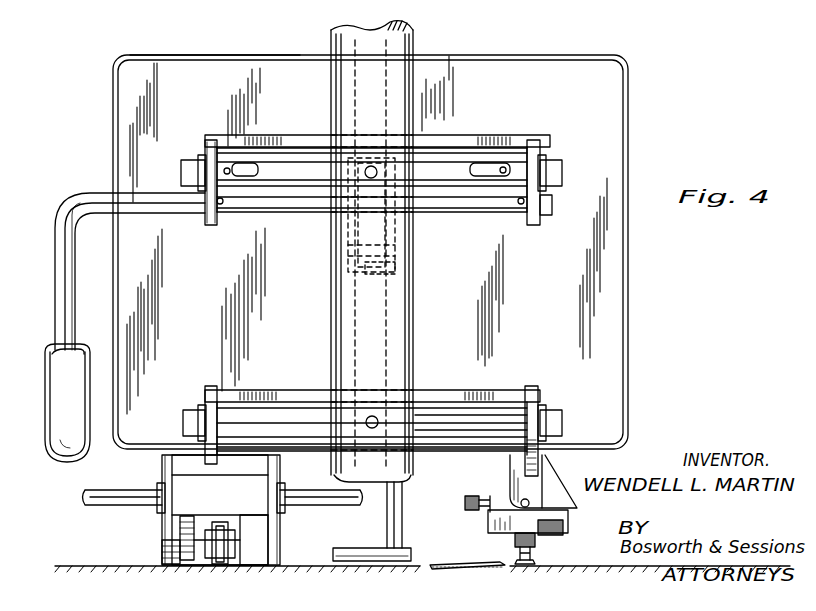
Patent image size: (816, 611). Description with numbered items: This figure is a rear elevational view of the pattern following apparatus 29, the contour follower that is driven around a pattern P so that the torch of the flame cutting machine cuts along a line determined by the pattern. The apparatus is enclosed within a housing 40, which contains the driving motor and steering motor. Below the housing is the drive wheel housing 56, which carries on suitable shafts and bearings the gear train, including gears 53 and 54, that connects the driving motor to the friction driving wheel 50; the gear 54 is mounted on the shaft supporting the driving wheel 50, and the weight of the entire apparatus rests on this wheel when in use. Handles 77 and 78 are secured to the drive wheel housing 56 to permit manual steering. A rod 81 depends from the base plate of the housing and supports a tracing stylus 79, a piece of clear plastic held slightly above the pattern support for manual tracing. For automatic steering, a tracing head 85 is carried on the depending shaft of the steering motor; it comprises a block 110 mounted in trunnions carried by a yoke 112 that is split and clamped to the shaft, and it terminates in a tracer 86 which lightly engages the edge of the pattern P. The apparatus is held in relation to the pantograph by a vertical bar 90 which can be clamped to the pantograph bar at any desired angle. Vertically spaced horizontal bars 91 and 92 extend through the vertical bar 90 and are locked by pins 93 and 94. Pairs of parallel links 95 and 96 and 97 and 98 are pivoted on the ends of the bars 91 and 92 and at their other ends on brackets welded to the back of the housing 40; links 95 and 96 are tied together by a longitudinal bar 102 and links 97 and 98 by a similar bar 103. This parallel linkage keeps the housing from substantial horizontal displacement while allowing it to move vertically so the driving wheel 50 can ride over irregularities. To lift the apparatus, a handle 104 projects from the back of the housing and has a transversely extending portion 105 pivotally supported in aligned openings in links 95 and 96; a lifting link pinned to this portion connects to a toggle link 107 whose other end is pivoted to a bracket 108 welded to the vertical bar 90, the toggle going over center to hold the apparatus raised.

The pattern following apparatus 29 is at (172, 52).
The housing 40 is at (628, 92).
The friction driving wheel 50 is at (222, 530).
The gear 53 is at (190, 516).
The gear 54 is at (165, 541).
The drive wheel housing 56 is at (166, 466).
The handle 77 is at (326, 498).
The handle 78 is at (118, 497).
The tracing stylus 79 is at (410, 556).
The rod 81 is at (400, 540).
The tracing head 85 is at (482, 521).
The tracer 86 is at (515, 550).
The vertical bar 90 is at (393, 322).
The horizontal bar 91 is at (470, 170).
The horizontal bar 92 is at (447, 428).
The pin 93 is at (366, 177).
The pin 94 is at (376, 416).
The link 95 is at (207, 150).
The link 96 is at (545, 150).
The link 97 is at (207, 402).
The link 98 is at (538, 403).
The horizontal bar 102 is at (452, 135).
The horizontal bar 103 is at (493, 393).
The handle 104 is at (62, 435).
The transversely extending portion 105 is at (190, 208).
The toggle link 107 is at (348, 265).
The bracket 108 is at (380, 275).
The block 110 is at (495, 486).
The yoke 112 is at (520, 472).
The pattern P is at (498, 568).